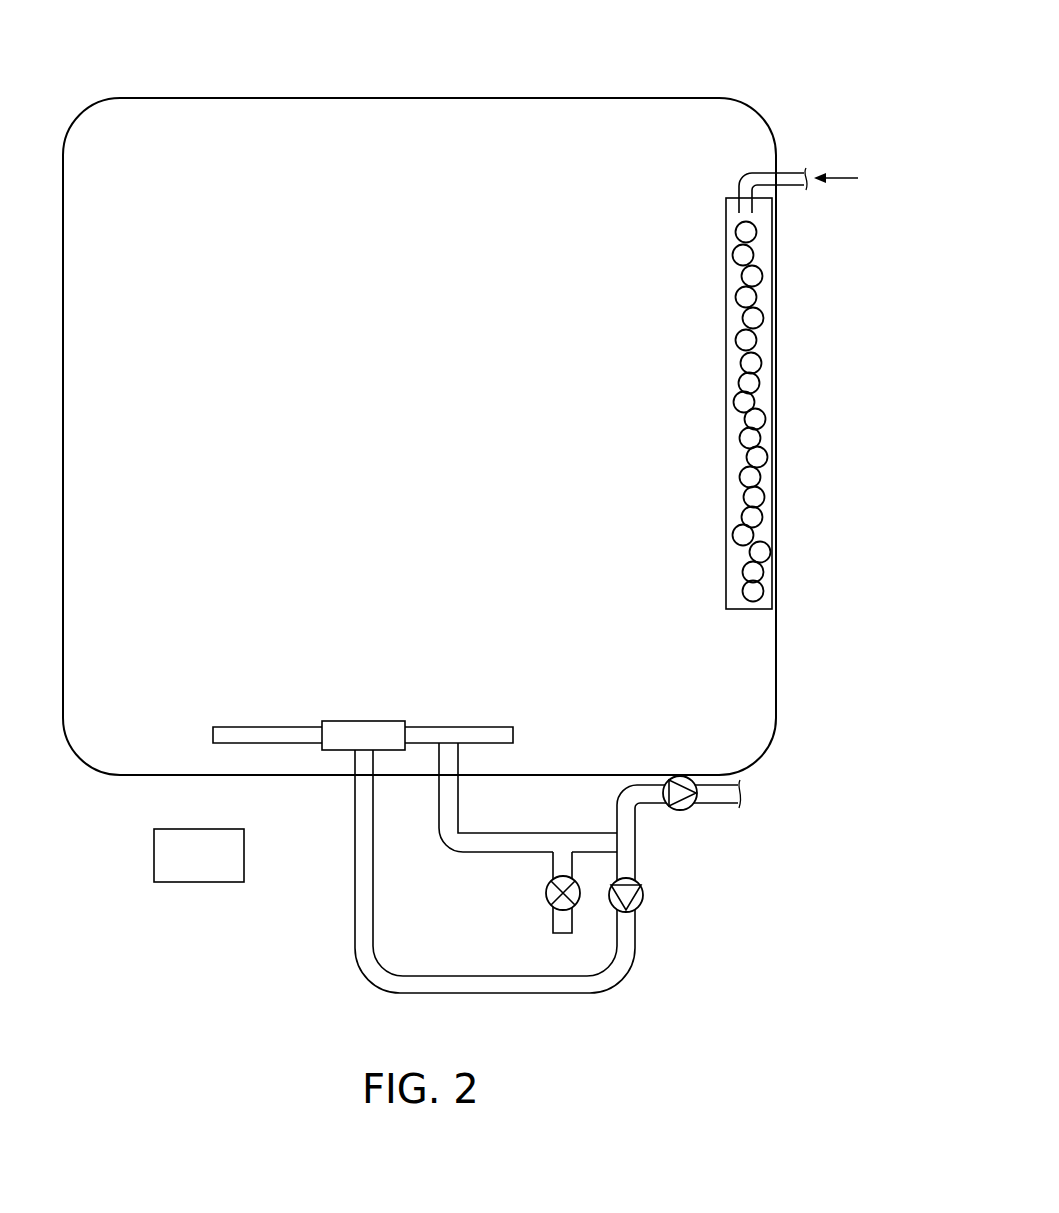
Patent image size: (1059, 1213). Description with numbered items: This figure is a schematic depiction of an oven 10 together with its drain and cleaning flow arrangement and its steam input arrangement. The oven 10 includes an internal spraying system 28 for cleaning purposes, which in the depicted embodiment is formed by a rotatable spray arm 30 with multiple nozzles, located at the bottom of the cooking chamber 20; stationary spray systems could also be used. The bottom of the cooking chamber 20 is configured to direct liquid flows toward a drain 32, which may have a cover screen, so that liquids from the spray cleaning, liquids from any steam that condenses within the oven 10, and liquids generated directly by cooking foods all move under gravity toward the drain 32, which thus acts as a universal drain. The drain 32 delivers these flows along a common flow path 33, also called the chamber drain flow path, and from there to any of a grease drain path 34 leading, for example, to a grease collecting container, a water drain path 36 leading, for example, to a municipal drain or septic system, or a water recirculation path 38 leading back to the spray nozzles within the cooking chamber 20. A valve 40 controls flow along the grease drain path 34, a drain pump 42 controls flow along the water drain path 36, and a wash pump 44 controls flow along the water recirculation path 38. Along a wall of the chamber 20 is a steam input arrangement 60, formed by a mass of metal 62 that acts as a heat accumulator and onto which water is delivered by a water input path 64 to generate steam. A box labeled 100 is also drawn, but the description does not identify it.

The oven 10 is at (784, 100).
The cooking chamber 20 is at (400, 448).
The internal spraying system 28 is at (368, 715).
The rotatable spray arm 30 is at (266, 727).
The drain 32 is at (450, 775).
The common flow path 33 is at (508, 832).
The grease drain path 34 is at (553, 925).
The water drain path 36 is at (739, 806).
The water recirculation path 38 is at (637, 940).
The valve 40 is at (546, 893).
The drain pump 42 is at (680, 811).
The wash pump 44 is at (644, 893).
The steam input arrangement 60 is at (699, 207).
The mass of metal 62 is at (756, 275).
The water input path 64 is at (790, 172).
The controller 100 is at (178, 871).